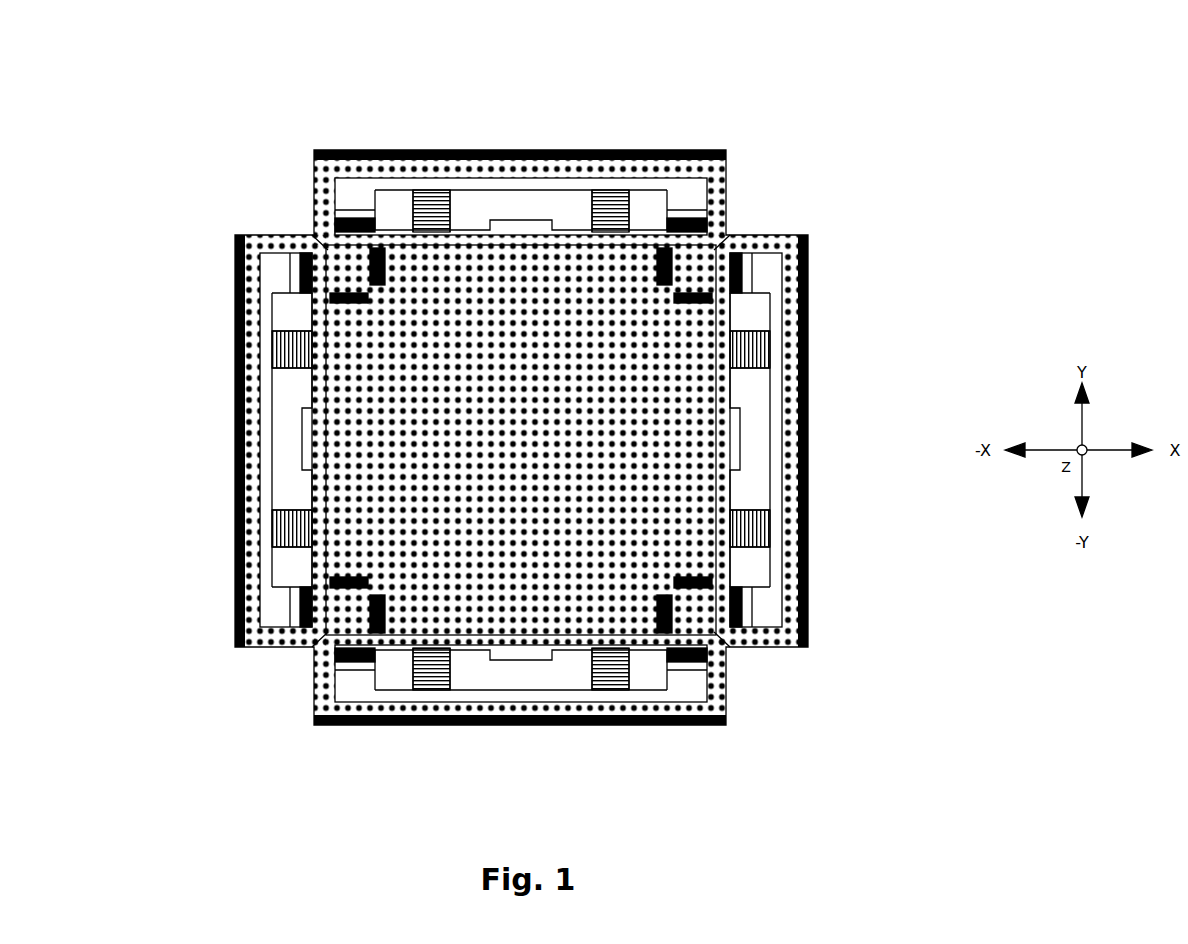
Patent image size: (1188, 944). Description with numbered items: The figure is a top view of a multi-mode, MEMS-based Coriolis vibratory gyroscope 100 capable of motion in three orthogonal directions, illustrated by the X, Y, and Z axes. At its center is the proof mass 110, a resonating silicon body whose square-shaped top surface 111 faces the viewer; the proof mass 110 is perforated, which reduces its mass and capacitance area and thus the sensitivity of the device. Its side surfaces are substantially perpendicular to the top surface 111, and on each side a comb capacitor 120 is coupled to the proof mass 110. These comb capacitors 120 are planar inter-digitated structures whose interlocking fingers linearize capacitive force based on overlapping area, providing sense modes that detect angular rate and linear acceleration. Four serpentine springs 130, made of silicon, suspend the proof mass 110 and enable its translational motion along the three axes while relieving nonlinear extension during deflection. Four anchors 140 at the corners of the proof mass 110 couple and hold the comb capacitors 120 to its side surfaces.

The multi-mode MEMS-based Coriolis vibratory gyroscope 100 is at (719, 70).
The proof mass 110 is at (496, 451).
The top surface 111 is at (340, 395).
The comb capacitors 120 is at (316, 162).
The serpentine springs 130 is at (431, 192).
The anchors 140 is at (393, 270).